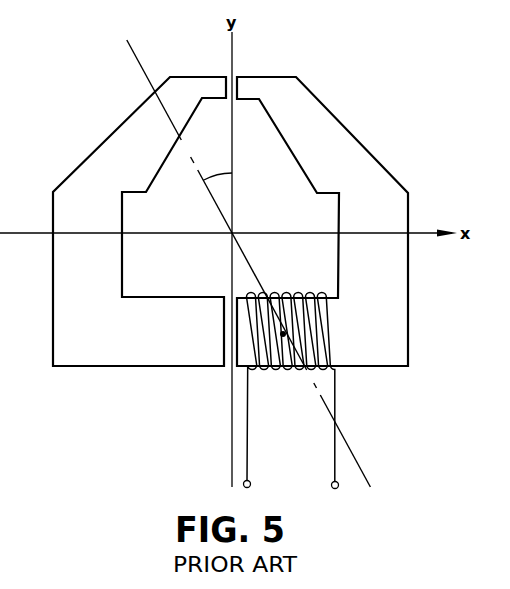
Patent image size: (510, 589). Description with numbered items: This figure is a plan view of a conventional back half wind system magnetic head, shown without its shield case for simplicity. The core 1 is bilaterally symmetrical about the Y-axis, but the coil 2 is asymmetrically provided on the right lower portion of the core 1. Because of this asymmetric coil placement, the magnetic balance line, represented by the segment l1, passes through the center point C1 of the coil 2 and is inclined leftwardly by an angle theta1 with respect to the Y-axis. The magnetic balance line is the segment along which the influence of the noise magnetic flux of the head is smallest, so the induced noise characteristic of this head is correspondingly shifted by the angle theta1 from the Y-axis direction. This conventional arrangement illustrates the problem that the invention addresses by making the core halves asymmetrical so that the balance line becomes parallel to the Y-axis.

The core 1 is at (163, 360).
The coil 2 is at (328, 308).
The center point of the coil C1 is at (286, 334).
The magnetic balance line l1 is at (363, 470).
The angle of inclination theta1 is at (217, 165).